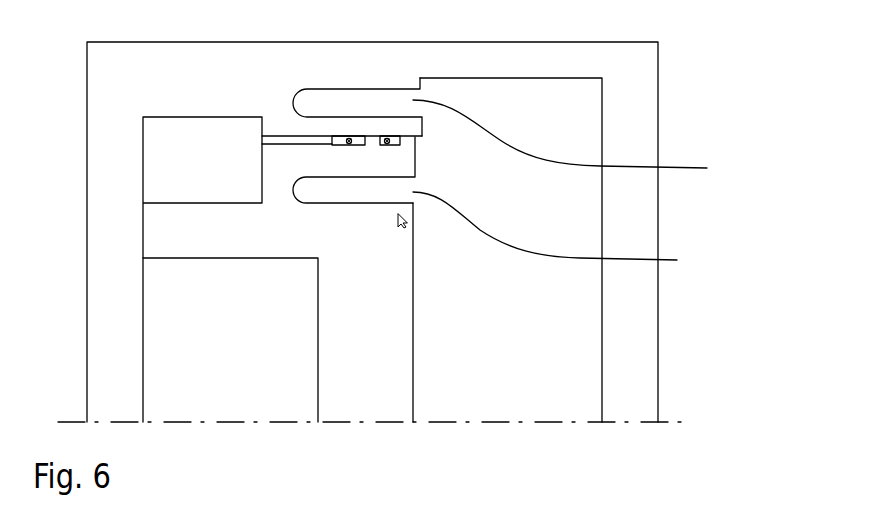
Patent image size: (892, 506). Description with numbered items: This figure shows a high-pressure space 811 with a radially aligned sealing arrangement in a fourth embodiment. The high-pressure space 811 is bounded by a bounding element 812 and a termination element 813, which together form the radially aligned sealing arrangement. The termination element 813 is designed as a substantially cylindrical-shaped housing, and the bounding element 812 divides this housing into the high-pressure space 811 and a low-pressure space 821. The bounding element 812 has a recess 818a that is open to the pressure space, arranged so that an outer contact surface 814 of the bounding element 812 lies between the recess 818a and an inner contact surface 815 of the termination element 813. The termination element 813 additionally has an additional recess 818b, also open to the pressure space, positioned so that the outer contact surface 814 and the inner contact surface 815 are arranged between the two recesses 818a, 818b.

The high-pressure space 811 is at (535, 380).
The bounding element 812 is at (372, 399).
The termination element 813 is at (638, 380).
The outer contact surface 814 is at (345, 138).
The inner contact surface 815 is at (368, 137).
The recess 818a is at (577, 232).
The additional recess 818b is at (590, 141).
The low-pressure space 821 is at (245, 381).